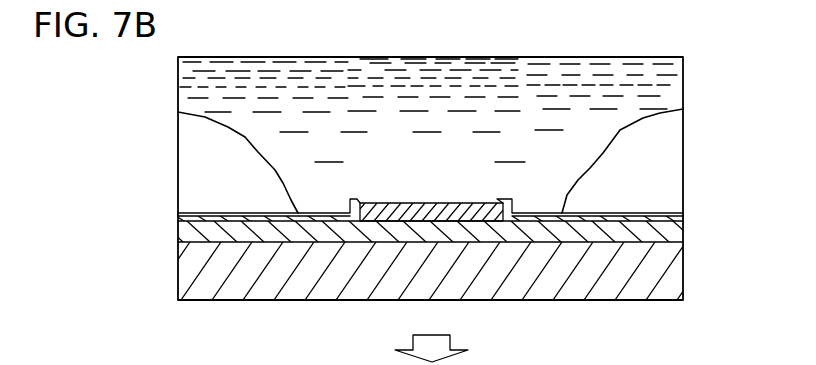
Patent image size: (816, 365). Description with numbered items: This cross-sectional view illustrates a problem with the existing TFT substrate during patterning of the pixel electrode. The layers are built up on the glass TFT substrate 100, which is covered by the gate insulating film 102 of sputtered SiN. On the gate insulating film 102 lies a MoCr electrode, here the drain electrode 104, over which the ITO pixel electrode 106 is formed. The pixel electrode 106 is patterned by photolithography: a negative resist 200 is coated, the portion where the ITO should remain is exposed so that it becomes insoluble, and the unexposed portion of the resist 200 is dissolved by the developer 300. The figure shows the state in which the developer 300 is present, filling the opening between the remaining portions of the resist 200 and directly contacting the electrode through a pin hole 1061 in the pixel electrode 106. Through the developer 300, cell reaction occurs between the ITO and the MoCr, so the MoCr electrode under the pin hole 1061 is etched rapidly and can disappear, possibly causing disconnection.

The TFT substrate 100 is at (670, 277).
The gate insulating film 102 is at (670, 228).
The drain electrode 104 is at (437, 219).
The pixel electrode 106 is at (635, 213).
The pin hole 1061 is at (430, 185).
The resist 200 is at (670, 155).
The developer 300 is at (670, 87).